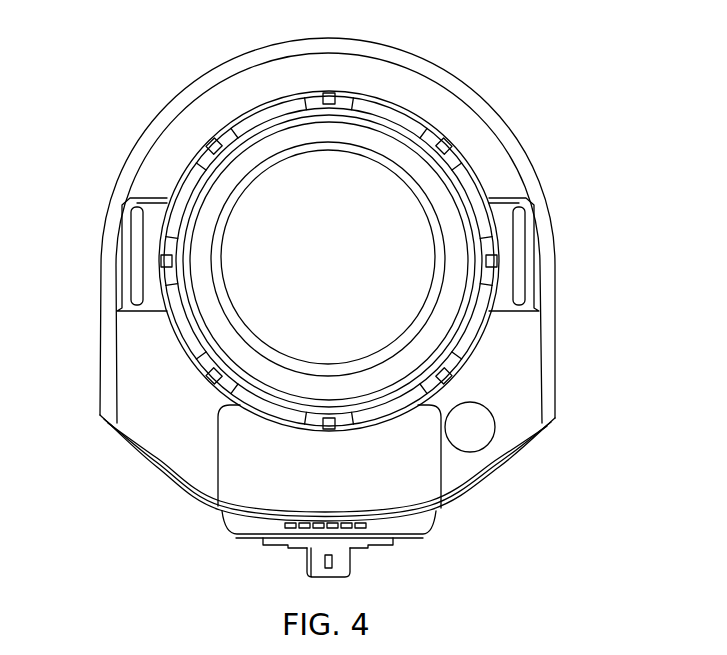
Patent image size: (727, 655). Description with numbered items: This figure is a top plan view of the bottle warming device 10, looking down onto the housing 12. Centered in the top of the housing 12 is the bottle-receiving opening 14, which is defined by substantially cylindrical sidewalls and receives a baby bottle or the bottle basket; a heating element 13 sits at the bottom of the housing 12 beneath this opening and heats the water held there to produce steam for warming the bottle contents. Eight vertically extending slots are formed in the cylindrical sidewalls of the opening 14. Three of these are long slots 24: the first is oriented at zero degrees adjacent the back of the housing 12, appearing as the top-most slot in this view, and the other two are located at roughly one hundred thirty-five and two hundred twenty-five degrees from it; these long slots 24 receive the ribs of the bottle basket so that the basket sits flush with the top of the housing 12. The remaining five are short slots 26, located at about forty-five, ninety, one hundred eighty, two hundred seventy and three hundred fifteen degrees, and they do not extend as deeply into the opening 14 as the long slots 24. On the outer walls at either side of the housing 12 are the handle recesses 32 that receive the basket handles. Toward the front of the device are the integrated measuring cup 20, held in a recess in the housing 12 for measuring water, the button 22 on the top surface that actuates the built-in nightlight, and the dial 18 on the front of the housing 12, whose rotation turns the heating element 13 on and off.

The bottle warming device 10 is at (608, 67).
The housing 12 is at (260, 83).
The heating element 13 is at (250, 311).
The bottle-receiving opening 14 is at (365, 190).
The dial 18 is at (341, 561).
The measuring cup 20 is at (430, 498).
The button 22 is at (477, 437).
The long slots 24 is at (328, 93).
The short slots 26 is at (210, 146).
The handle recesses 32 is at (128, 287).